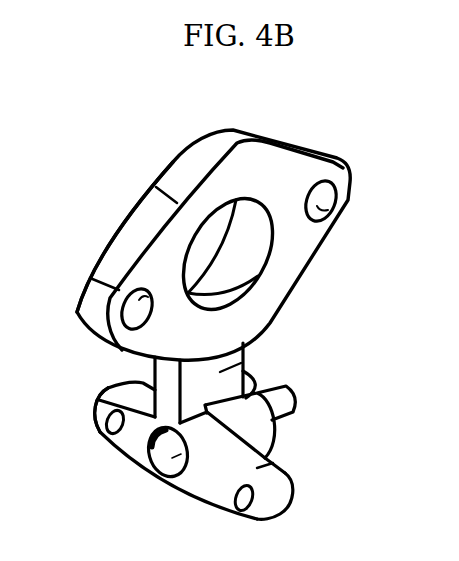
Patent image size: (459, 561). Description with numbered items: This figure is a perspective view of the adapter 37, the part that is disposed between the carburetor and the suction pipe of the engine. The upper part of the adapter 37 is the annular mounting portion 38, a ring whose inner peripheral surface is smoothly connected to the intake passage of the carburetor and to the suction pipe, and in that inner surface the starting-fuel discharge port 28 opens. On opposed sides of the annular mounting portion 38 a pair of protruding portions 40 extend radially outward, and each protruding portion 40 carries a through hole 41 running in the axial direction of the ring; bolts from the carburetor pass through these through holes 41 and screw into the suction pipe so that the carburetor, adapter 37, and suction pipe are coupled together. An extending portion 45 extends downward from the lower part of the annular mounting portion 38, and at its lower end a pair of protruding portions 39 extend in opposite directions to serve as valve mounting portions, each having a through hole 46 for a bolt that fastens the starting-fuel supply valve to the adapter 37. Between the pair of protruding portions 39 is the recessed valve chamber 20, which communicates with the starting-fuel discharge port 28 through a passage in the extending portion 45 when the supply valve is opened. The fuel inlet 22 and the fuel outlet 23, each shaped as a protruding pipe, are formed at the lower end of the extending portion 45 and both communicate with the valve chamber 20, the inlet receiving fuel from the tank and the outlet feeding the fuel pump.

The valve chamber 20 is at (153, 473).
The fuel inlet 22 is at (299, 397).
The fuel outlet 23 is at (259, 372).
The starting-fuel discharge port 28 is at (218, 289).
The adapter 37 is at (173, 163).
The annular mounting portion 38 is at (276, 176).
The protruding portions 39 is at (93, 405).
The protruding portions 40 is at (93, 312).
The through hole 41 is at (127, 291).
The extending portion 45 is at (250, 347).
The through hole 46 is at (103, 437).